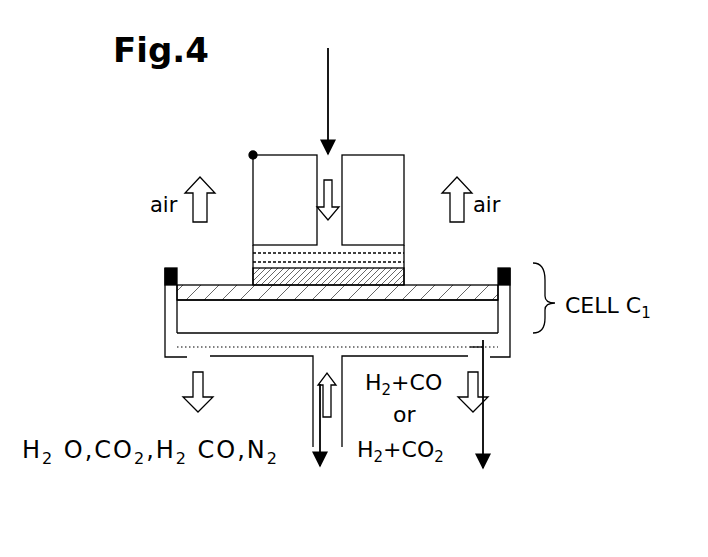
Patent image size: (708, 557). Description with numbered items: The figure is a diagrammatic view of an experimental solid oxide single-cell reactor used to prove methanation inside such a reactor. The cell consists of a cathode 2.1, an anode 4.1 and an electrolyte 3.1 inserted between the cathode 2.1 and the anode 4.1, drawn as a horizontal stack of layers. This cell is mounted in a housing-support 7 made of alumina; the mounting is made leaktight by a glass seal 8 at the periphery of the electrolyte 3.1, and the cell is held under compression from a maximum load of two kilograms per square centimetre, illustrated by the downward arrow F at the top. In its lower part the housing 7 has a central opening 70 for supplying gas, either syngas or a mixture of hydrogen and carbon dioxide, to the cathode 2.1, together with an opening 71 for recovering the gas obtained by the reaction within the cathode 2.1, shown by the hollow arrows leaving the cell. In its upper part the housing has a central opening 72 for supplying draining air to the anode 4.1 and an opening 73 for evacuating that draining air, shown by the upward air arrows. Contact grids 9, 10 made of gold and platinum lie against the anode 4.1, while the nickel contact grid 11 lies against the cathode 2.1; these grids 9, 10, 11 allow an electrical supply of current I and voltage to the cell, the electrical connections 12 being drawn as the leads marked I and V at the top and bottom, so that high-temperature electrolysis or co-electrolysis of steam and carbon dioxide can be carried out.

The cathode 2.1 is at (177, 316).
The electrolyte 3.1 is at (177, 288).
The anode 4.1 is at (253, 277).
The housing-support 7 is at (160, 352).
The glass seal 8 is at (170, 268).
The contact grid 9 is at (404, 256).
The contact grid 10 is at (404, 268).
The contact grid 11 is at (498, 320).
The electrical connection 12 is at (410, 156).
The central opening 70 is at (332, 443).
The opening 71 is at (203, 357).
The central opening 72 is at (338, 155).
The opening 73 is at (240, 247).